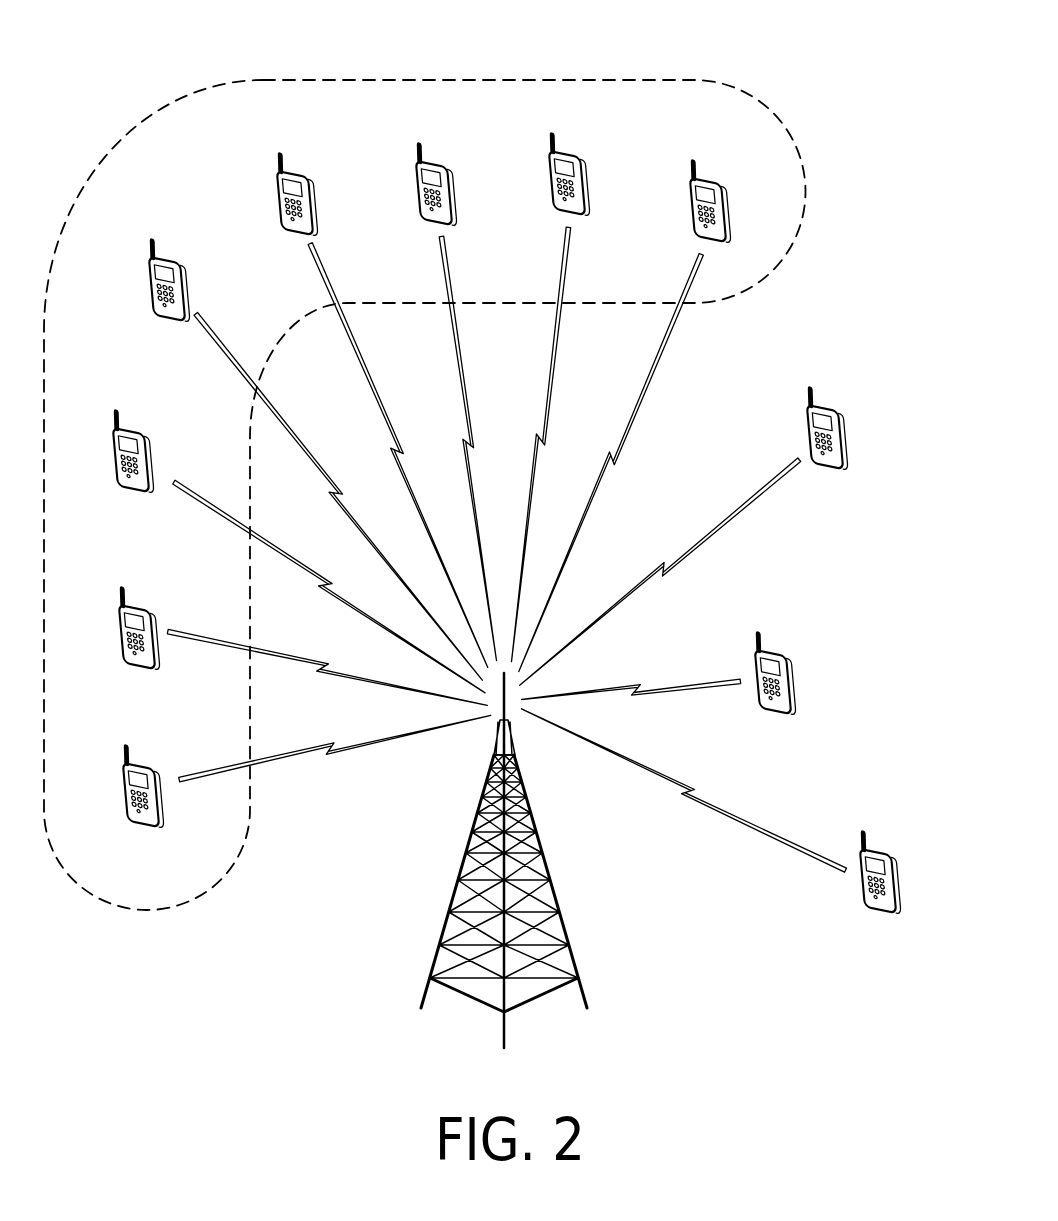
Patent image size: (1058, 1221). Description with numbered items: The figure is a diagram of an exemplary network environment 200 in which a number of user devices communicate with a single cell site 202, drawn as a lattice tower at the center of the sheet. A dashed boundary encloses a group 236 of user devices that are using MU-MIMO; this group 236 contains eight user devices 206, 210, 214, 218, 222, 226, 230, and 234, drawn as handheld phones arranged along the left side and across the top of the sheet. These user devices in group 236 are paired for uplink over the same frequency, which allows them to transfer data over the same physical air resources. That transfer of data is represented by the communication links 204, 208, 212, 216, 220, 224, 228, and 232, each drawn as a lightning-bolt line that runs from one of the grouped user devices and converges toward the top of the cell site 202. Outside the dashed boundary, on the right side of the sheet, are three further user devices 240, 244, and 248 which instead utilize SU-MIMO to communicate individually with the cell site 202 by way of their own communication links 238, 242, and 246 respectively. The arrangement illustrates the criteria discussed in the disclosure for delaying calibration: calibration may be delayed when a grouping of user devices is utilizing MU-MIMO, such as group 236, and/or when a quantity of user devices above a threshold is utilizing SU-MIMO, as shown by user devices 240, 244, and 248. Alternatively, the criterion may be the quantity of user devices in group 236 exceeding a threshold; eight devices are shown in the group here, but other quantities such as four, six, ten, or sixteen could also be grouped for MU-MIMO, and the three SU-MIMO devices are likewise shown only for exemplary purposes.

The network environment 200 is at (104, 78).
The cell site 202 is at (466, 872).
The communication link 204 is at (360, 752).
The user device 206 is at (120, 794).
The communication link 208 is at (366, 684).
The user device 210 is at (117, 640).
The communication link 212 is at (350, 612).
The user device 214 is at (113, 464).
The communication link 216 is at (342, 512).
The user device 218 is at (148, 292).
The communication link 220 is at (372, 400).
The user device 222 is at (277, 194).
The communication link 224 is at (460, 392).
The user device 226 is at (416, 188).
The communication link 228 is at (548, 377).
The user device 230 is at (548, 184).
The communication link 232 is at (642, 396).
The user device 234 is at (689, 212).
The group of MU-MIMO user devices 236 is at (692, 80).
The communication link 238 is at (722, 514).
The user device 240 is at (847, 433).
The communication link 242 is at (646, 697).
The user device 244 is at (795, 674).
The communication link 246 is at (722, 816).
The user device 248 is at (900, 876).